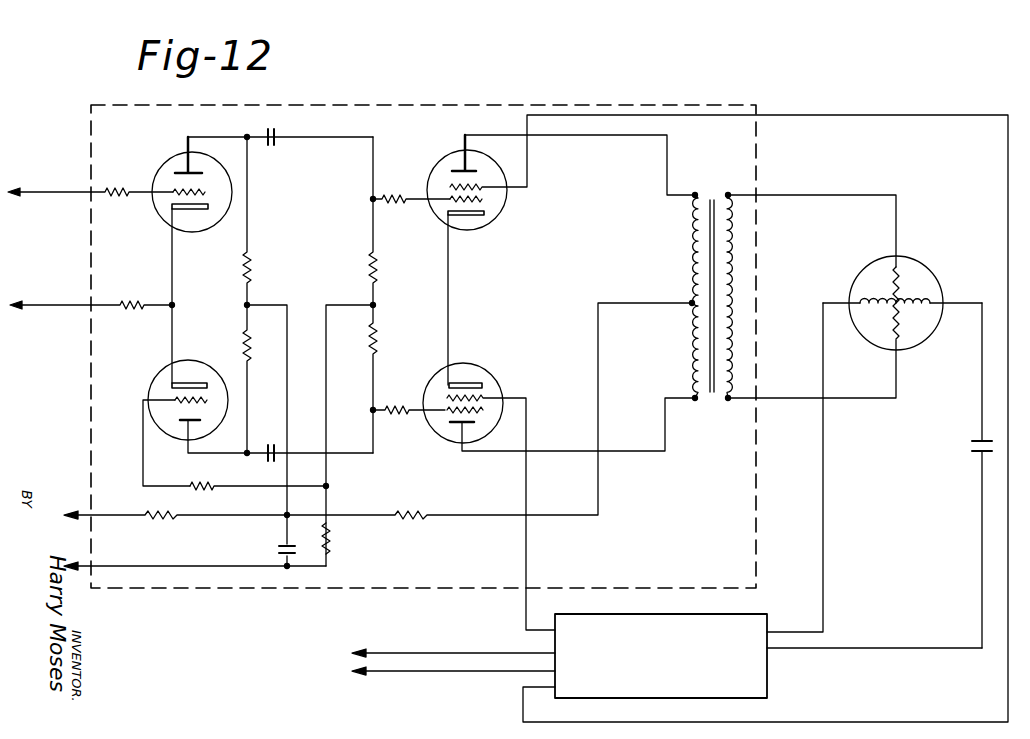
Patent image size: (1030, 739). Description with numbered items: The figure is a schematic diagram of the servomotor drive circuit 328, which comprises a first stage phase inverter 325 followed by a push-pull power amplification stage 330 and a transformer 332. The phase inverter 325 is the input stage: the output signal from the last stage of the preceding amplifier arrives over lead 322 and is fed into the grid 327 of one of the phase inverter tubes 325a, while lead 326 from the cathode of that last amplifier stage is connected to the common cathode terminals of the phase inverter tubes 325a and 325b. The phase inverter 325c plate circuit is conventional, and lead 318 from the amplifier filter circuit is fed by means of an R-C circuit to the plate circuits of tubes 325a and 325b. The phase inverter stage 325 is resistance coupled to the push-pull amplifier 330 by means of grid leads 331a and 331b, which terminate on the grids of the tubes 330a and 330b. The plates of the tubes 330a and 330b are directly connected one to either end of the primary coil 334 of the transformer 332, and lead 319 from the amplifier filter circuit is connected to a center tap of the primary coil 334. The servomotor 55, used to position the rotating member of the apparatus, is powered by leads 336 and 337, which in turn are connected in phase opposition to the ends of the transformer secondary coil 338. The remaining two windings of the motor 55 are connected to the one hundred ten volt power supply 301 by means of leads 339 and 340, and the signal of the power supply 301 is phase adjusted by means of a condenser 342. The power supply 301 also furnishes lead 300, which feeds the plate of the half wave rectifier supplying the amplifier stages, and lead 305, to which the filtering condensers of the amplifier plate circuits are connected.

The servomotor 55 is at (921, 280).
The power supply lead 300 is at (426, 655).
The power supply 301 is at (770, 690).
The power supply lead 305 is at (480, 673).
The lead 318 is at (112, 570).
The lead 319 is at (112, 522).
The lead 322 is at (68, 190).
The phase inverter stage 325 is at (219, 136).
The phase inverter tube 325a is at (170, 166).
The phase inverter tube 325b is at (168, 384).
The phase inverter plate circuit 325c is at (312, 137).
The lead 326 is at (54, 292).
The grid 327 is at (172, 197).
The servomotor drive circuit 328 is at (258, 592).
The push-pull power amplification stage 330 is at (450, 325).
The push-pull amplifier tube 330a is at (484, 219).
The push-pull amplifier tube 330b is at (478, 378).
The grid lead 331a is at (440, 207).
The grid lead 331b is at (438, 420).
The transformer 332 is at (712, 395).
The primary coil 334 is at (690, 322).
The lead 336 is at (798, 197).
The lead 337 is at (812, 388).
The secondary coil 338 is at (740, 298).
The lead 339 is at (830, 587).
The lead 340 is at (875, 650).
The condenser 342 is at (970, 445).